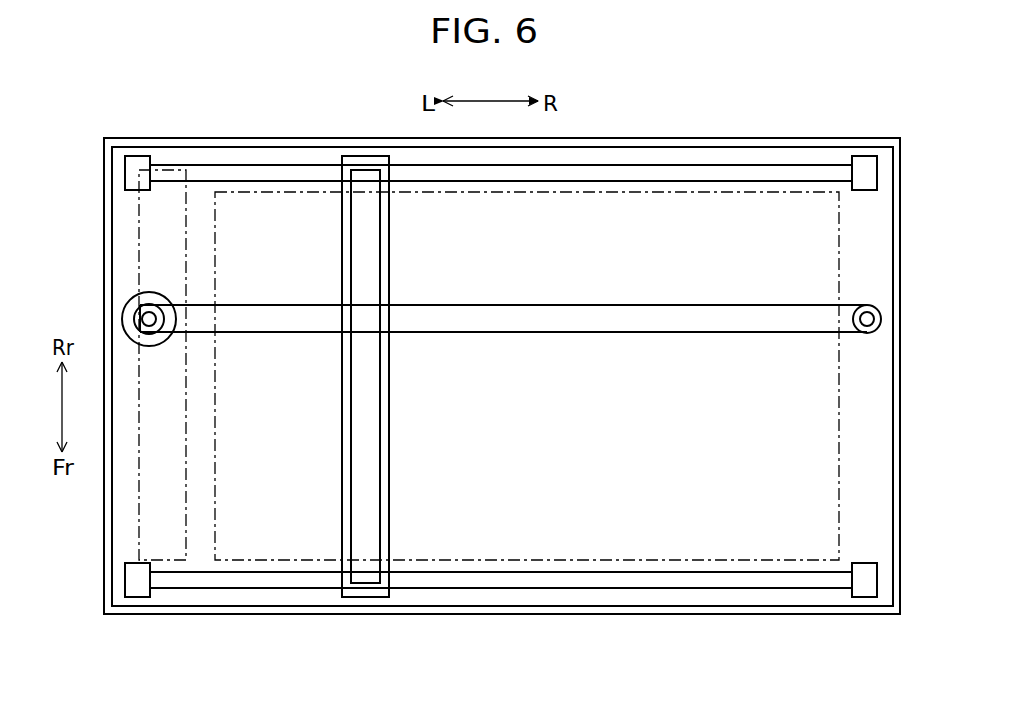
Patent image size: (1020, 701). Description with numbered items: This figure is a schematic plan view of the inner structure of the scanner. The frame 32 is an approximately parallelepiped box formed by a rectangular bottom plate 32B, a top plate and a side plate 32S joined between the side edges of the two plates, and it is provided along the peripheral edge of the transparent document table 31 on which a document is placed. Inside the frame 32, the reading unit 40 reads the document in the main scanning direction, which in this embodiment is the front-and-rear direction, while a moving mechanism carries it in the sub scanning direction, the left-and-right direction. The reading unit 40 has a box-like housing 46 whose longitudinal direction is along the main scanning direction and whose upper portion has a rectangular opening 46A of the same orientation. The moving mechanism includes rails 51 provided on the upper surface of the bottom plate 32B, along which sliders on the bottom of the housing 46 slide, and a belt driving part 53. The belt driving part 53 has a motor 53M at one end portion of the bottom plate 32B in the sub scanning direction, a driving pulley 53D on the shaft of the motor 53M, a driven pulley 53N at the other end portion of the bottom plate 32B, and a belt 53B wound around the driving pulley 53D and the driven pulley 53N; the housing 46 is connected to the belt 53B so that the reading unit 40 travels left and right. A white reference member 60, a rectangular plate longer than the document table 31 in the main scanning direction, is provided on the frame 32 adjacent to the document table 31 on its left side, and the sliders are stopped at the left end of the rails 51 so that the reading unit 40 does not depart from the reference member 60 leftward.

The document table 31 is at (839, 268).
The frame 32 is at (798, 131).
The side plate 32S is at (720, 138).
The bottom plate 32B is at (650, 160).
The reading unit 40 is at (405, 392).
The housing 46 is at (401, 376).
The opening 46A is at (381, 248).
The rails 51 is at (567, 165).
The belt driving part 53 is at (462, 312).
The belt 53B is at (235, 304).
The motor 53M is at (149, 292).
The driving pulley 53D is at (143, 334).
The driven pulley 53N is at (872, 334).
The reference member 60 is at (140, 213).